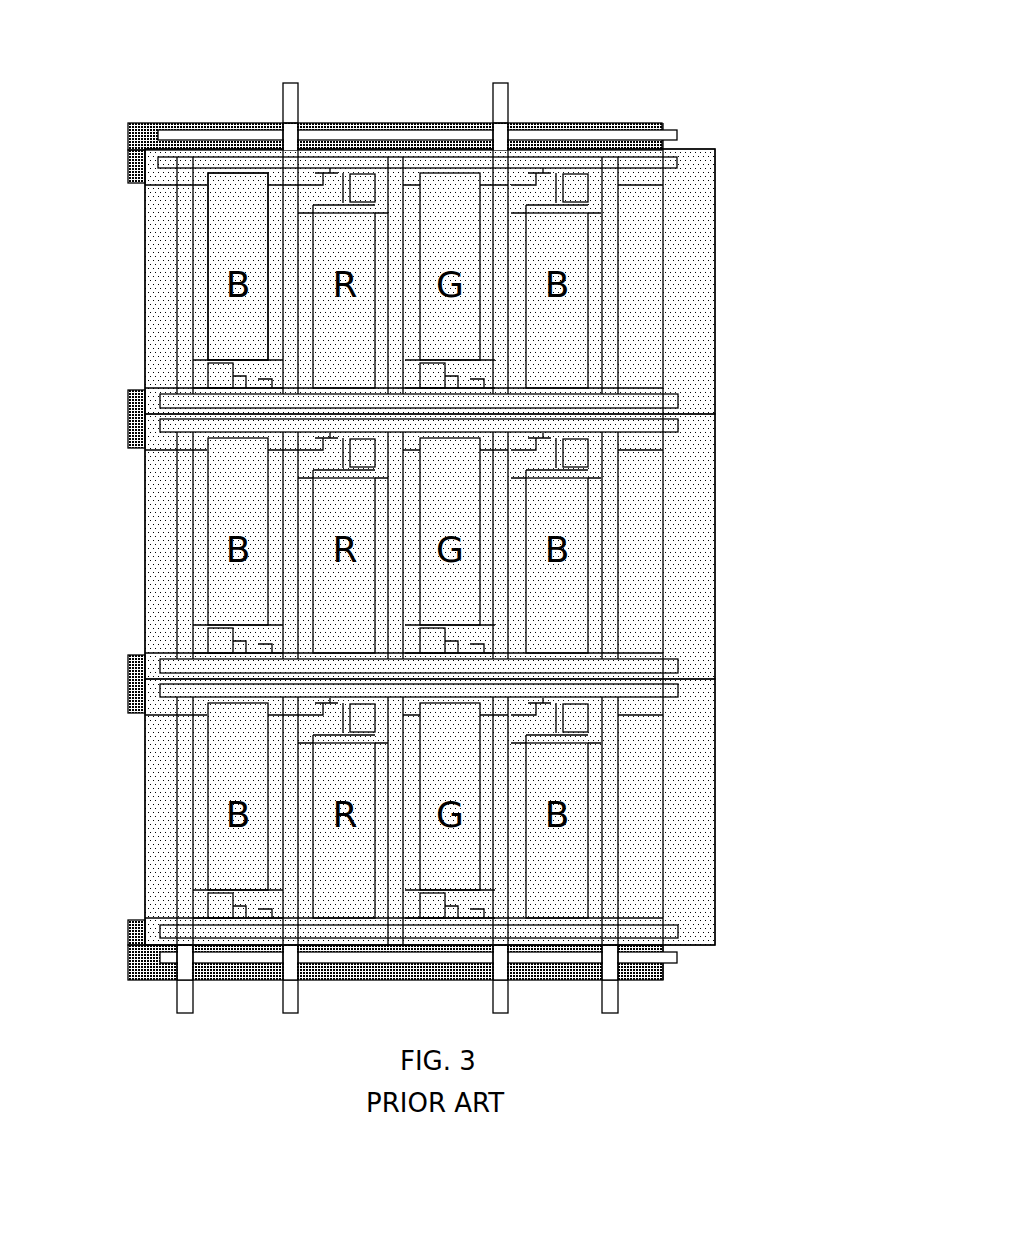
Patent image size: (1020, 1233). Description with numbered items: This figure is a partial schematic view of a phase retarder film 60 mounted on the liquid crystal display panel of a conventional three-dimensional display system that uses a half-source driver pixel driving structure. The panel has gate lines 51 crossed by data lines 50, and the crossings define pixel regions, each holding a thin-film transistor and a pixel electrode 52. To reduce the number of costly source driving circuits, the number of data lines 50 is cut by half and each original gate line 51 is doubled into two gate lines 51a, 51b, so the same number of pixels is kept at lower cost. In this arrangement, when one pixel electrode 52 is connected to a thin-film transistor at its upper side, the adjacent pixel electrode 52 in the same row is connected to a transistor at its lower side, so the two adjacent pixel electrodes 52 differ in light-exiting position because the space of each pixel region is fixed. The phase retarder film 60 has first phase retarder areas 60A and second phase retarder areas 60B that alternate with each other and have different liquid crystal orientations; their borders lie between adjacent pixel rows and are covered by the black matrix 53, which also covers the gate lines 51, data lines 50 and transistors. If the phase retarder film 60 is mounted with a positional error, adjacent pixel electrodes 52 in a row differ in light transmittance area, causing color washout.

The data line 50 is at (291, 92).
The gate line 51 is at (489, 122).
The gate line 51a is at (683, 136).
The gate line 51b is at (683, 163).
The pixel electrode 52 is at (212, 243).
The black matrix 53 is at (650, 123).
The phase retarder film 60 is at (492, 547).
The first phase retarder area 60A is at (697, 277).
The second phase retarder area 60B is at (697, 580).